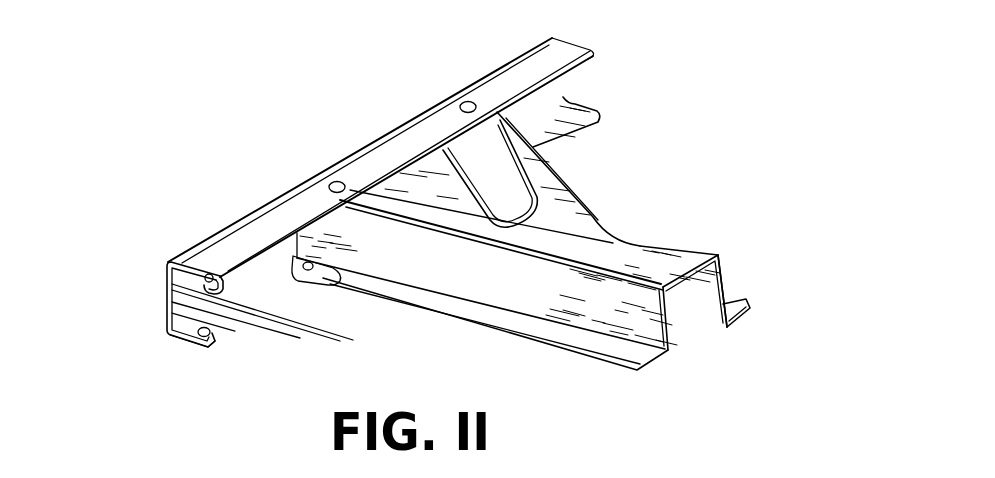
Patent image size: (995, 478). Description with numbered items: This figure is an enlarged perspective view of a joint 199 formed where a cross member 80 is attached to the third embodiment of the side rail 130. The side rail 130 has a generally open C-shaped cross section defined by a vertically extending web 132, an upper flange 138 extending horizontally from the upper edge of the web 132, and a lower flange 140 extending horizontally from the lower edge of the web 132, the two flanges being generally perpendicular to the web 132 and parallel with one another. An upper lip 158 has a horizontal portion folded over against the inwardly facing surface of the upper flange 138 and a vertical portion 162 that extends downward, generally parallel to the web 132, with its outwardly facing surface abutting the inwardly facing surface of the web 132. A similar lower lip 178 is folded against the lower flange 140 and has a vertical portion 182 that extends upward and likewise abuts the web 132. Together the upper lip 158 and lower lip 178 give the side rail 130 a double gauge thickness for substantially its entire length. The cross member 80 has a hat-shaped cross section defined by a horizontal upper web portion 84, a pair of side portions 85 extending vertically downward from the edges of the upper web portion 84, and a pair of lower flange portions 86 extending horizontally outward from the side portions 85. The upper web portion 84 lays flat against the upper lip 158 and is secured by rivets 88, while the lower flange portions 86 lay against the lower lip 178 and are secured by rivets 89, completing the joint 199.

The joint 199 is at (344, 98).
The side rail 130 is at (251, 205).
The rivets 88 is at (334, 181).
The web 132 is at (166, 288).
The upper flange 138 is at (190, 263).
The upper lip 158 is at (218, 272).
The lower lip 178 is at (213, 347).
The lower flange 140 is at (190, 347).
The vertical portion 162 is at (253, 317).
The vertical portion 182 is at (215, 318).
The rivets 89 is at (312, 268).
The cross member 80 is at (676, 260).
The side portions 85 is at (510, 290).
The lower flange portions 86 is at (438, 310).
The upper web portion 84 is at (568, 217).